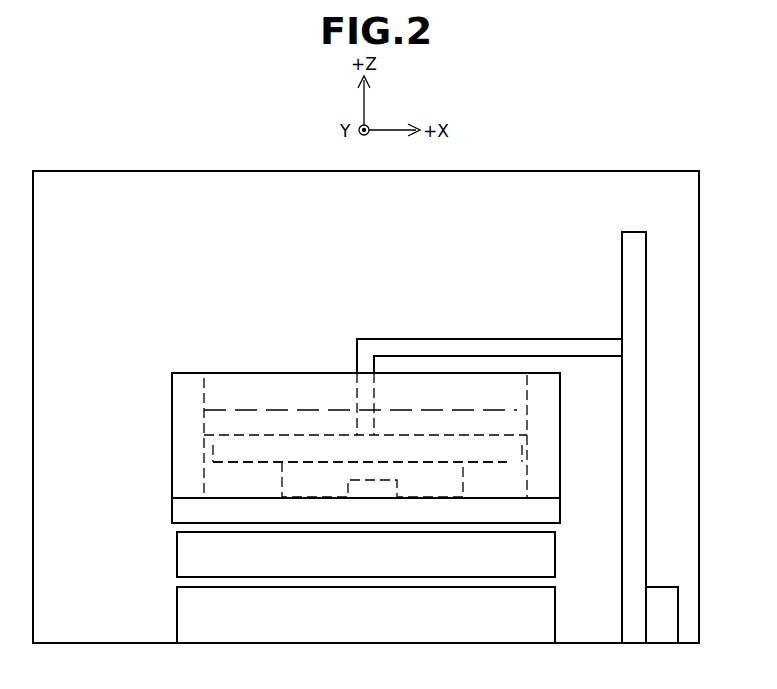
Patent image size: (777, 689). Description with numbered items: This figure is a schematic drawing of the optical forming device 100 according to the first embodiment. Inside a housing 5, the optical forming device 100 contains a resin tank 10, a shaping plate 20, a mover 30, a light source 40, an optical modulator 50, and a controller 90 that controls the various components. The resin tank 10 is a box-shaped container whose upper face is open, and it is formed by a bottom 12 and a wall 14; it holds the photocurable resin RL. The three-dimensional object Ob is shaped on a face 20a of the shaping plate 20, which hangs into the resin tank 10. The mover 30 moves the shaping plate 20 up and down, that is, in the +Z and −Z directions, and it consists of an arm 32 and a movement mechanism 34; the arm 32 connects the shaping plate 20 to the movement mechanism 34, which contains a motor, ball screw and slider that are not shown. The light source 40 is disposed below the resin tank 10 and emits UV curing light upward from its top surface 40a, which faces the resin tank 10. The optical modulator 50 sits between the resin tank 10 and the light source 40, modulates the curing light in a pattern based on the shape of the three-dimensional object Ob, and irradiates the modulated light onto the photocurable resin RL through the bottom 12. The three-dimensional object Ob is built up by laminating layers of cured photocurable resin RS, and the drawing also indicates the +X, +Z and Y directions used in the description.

The optical forming device 100 is at (112, 144).
The housing 5 is at (630, 171).
The resin tank 10 is at (105, 398).
The bottom 12 is at (172, 507).
The wall 14 is at (172, 410).
The shaping plate 20 is at (530, 436).
The face 20a is at (503, 463).
The mover 30 is at (598, 272).
The arm 32 is at (521, 338).
The movement mechanism 34 is at (622, 325).
The light source 40 is at (177, 612).
The top surface 40a is at (193, 588).
The optical modulator 50 is at (177, 537).
The controller 90 is at (665, 587).
The photocurable resin RL is at (268, 416).
The three-dimensional object Ob is at (463, 485).
The cured photocurable resin layer RS is at (447, 489).